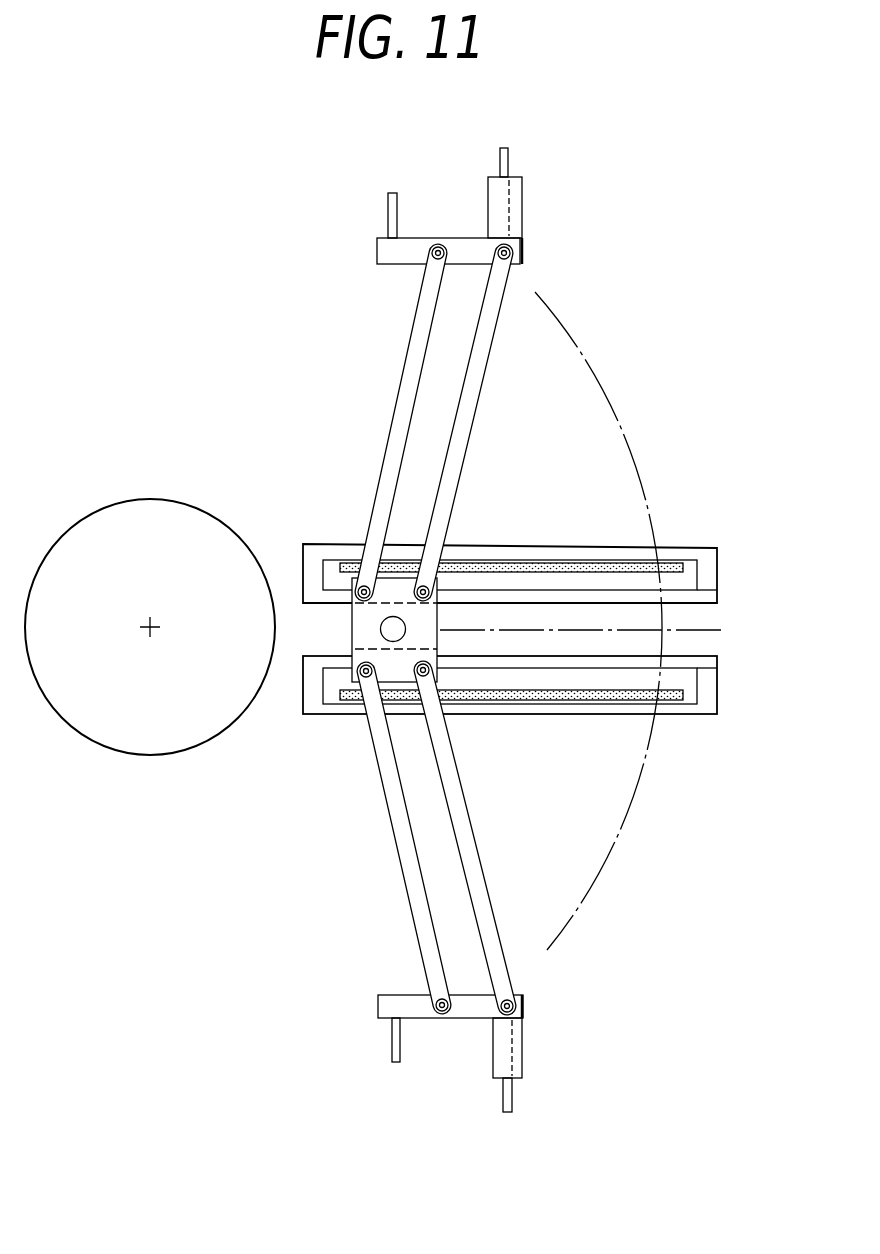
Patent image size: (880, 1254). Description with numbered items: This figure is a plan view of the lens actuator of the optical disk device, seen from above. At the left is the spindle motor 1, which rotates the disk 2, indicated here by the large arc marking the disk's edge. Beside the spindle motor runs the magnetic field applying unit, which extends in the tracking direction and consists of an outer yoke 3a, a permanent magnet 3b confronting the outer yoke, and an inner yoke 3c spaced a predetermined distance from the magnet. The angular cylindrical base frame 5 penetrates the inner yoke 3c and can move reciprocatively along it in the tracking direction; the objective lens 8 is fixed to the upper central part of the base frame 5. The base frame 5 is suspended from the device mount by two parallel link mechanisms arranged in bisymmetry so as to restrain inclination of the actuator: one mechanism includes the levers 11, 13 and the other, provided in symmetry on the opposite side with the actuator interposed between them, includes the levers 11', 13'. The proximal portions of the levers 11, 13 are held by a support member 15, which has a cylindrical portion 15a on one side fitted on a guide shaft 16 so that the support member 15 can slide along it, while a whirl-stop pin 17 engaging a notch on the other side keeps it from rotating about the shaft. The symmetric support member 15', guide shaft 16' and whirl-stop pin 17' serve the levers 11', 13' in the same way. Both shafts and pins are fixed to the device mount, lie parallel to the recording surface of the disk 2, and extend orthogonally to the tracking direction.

The spindle motor 1 is at (218, 535).
The disk 2 is at (575, 343).
The outer yoke 3a is at (540, 547).
The permanent magnet 3b is at (668, 568).
The inner yoke 3c is at (710, 600).
The base frame 5 is at (352, 623).
The objective lens 8 is at (393, 628).
The lever 11 is at (387, 838).
The lever 11' is at (386, 422).
The lever 13 is at (483, 838).
The lever 13' is at (482, 422).
The support member 15 is at (437, 969).
The support member 15' is at (412, 262).
The cylindrical portion 15a is at (514, 1058).
The guide shaft 16 is at (477, 1103).
The guide shaft 16' is at (536, 206).
The whirl-stop pin 17 is at (366, 1056).
The whirl-stop pin 17' is at (427, 202).